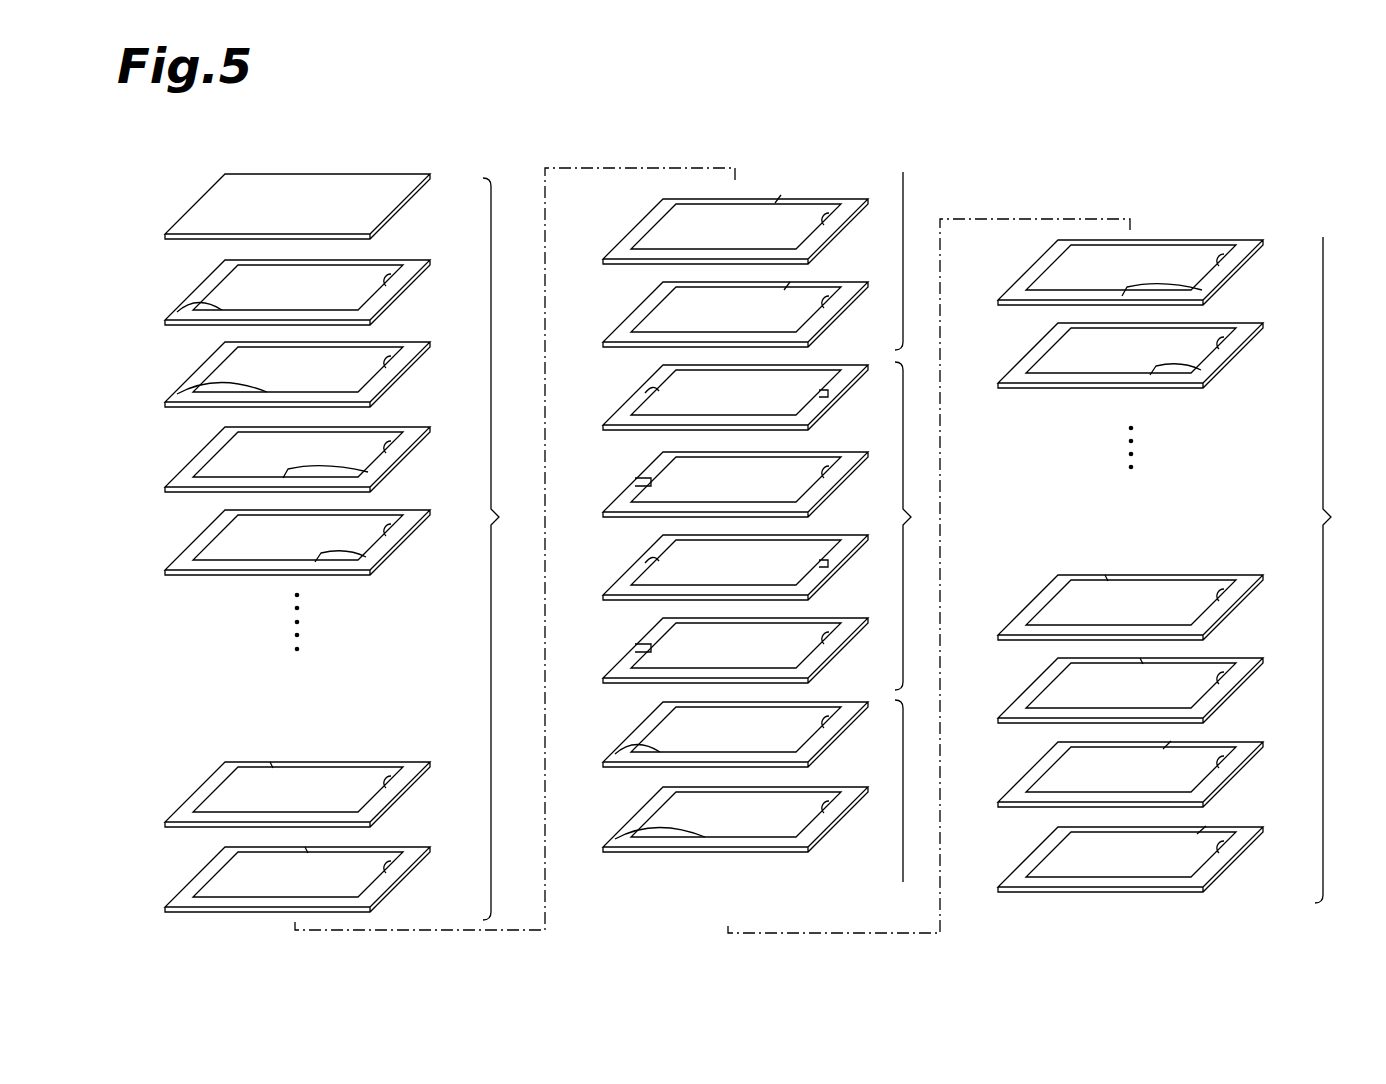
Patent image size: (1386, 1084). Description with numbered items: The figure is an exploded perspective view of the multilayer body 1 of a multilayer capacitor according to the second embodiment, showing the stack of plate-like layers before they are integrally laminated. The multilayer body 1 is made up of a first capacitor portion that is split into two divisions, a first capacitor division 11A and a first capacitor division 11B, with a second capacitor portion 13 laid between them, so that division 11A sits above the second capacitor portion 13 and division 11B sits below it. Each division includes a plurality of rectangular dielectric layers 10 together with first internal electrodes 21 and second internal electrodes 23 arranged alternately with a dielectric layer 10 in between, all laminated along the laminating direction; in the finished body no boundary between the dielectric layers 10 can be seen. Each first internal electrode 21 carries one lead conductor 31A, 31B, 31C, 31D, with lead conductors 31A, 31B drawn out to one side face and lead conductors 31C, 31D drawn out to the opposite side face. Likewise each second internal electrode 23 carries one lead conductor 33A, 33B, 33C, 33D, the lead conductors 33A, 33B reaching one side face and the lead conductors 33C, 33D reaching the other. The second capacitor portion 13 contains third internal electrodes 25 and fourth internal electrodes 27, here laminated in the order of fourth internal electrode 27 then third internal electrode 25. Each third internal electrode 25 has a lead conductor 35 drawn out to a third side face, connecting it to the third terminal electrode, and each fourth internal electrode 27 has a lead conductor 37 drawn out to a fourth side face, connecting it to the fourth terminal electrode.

The multilayer body 1 is at (1337, 212).
The dielectric layer 10 is at (198, 205).
The first capacitor division 11A is at (513, 549).
The first capacitor division 11B is at (1345, 570).
The second capacitor portion 13 is at (918, 527).
The first internal electrode 21 is at (390, 278).
The second internal electrode 23 is at (390, 360).
The third internal electrode 25 is at (823, 471).
The fourth internal electrode 27 is at (645, 392).
The lead conductor 31A is at (178, 313).
The lead conductor 31B is at (367, 473).
The lead conductor 31C is at (270, 762).
The lead conductor 31D is at (775, 205).
The lead conductor 33A is at (178, 395).
The lead conductor 33B is at (364, 558).
The lead conductor 33C is at (305, 847).
The lead conductor 33D is at (784, 290).
The lead conductor 35 is at (635, 479).
The lead conductor 37 is at (828, 394).